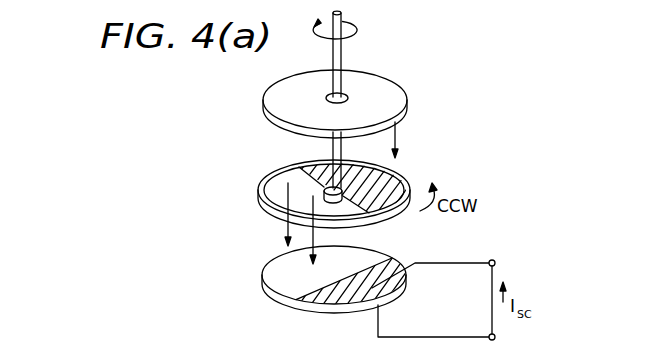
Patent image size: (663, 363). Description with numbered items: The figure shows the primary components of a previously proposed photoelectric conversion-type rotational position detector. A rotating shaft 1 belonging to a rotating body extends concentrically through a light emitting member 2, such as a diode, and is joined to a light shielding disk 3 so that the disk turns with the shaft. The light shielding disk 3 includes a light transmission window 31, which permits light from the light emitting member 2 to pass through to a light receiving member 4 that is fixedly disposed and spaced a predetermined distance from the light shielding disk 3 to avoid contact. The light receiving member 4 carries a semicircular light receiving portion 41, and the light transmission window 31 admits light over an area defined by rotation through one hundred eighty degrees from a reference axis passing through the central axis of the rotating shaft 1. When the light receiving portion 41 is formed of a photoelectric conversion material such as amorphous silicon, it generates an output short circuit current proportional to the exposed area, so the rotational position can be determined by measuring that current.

The rotating shaft 1 is at (341, 13).
The light emitting member 2 is at (382, 85).
The light shielding disk 3 is at (315, 189).
The light transmission window 31 is at (263, 187).
The light receiving member 4 is at (339, 274).
The light receiving portion 41 is at (385, 272).